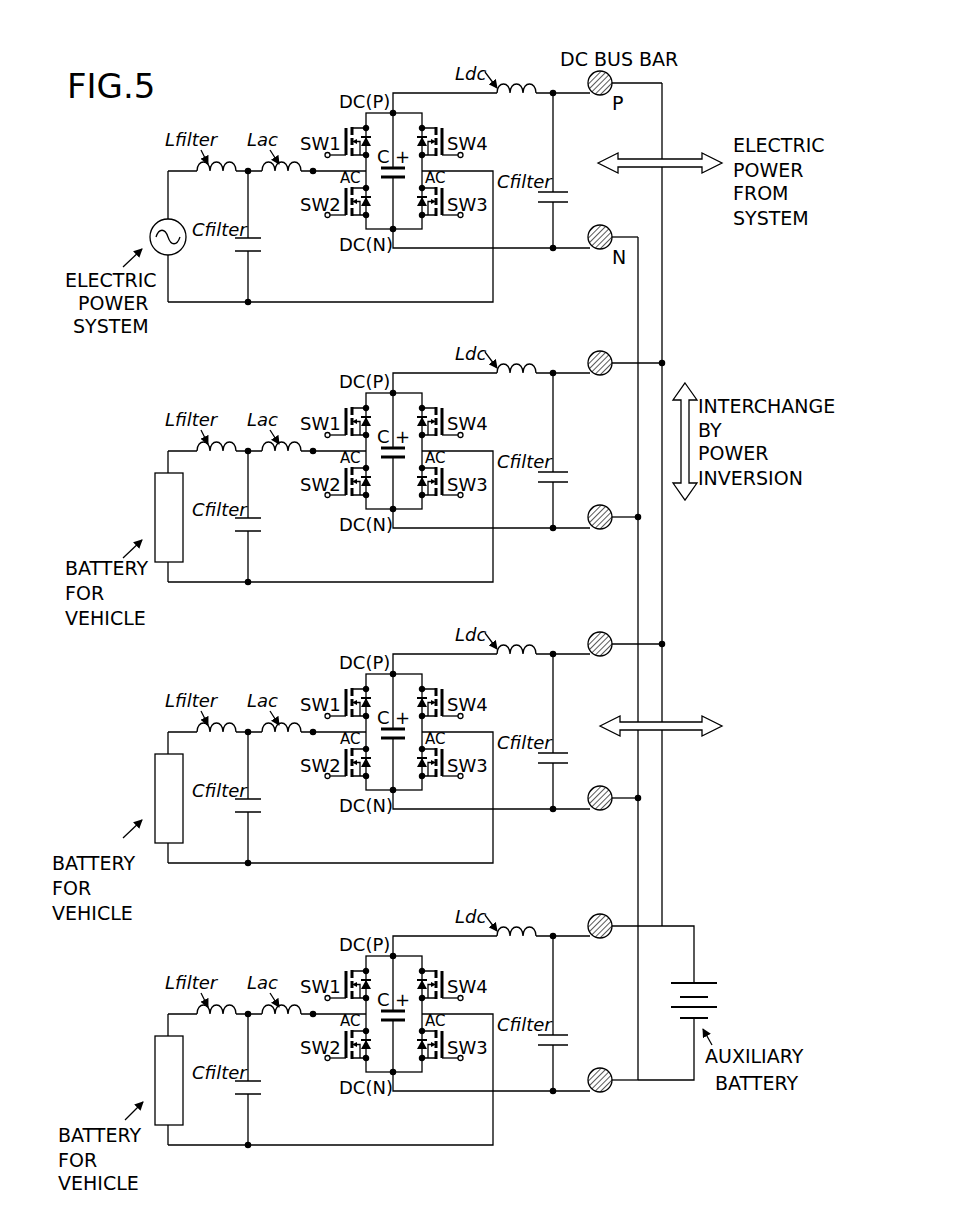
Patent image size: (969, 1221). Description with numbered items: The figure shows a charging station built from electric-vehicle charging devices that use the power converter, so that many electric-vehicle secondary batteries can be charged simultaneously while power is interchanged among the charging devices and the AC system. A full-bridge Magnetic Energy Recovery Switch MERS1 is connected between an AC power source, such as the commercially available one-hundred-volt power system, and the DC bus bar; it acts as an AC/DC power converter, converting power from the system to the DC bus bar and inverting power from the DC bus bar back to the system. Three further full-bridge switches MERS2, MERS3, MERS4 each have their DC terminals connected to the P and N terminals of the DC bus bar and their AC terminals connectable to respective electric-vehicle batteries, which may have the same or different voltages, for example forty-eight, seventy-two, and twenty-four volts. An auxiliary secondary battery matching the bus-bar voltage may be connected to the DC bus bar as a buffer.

The full-bridge type Magnetic Energy Recovery Switch MERS1 is at (313, 90).
The full-bridge type Magnetic Energy Recovery Switch MERS2 is at (313, 370).
The full-bridge type Magnetic Energy Recovery Switch MERS3 is at (313, 651).
The full-bridge type Magnetic Energy Recovery Switch MERS4 is at (313, 933).